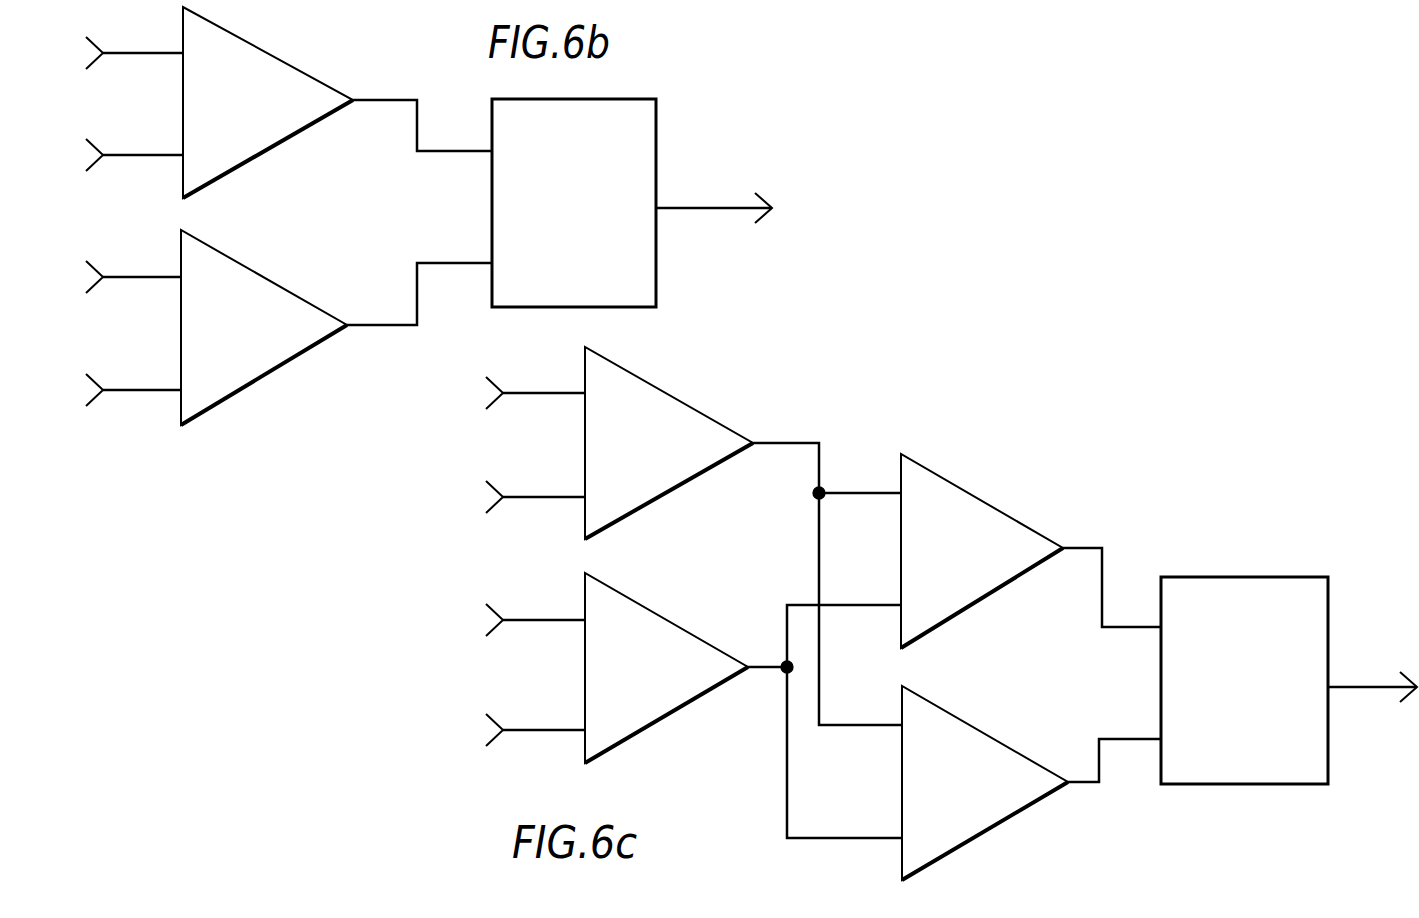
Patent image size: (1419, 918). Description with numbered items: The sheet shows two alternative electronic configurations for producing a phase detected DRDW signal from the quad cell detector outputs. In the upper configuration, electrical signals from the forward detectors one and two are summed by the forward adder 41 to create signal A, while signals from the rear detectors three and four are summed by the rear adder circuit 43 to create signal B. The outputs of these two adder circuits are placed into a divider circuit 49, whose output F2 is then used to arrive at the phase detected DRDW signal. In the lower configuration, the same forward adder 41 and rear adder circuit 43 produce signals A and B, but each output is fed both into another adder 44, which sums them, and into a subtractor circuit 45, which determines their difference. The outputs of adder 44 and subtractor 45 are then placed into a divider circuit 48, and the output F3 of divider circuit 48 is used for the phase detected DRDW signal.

In FIG. 6B, the adder 41 is at (270, 68).
In FIG. 6C, the adder 41 is at (678, 395).
In FIG. 6B, the adding circuit 43 is at (267, 290).
In FIG. 6C, the adding circuit 43 is at (667, 615).
In FIG. 6B, the divider circuit 49 is at (651, 138).
In FIG. 6C, the subtractor circuit 45 is at (982, 500).
In FIG. 6C, the adder 44 is at (960, 717).
In FIG. 6C, the divider circuit 48 is at (1289, 645).